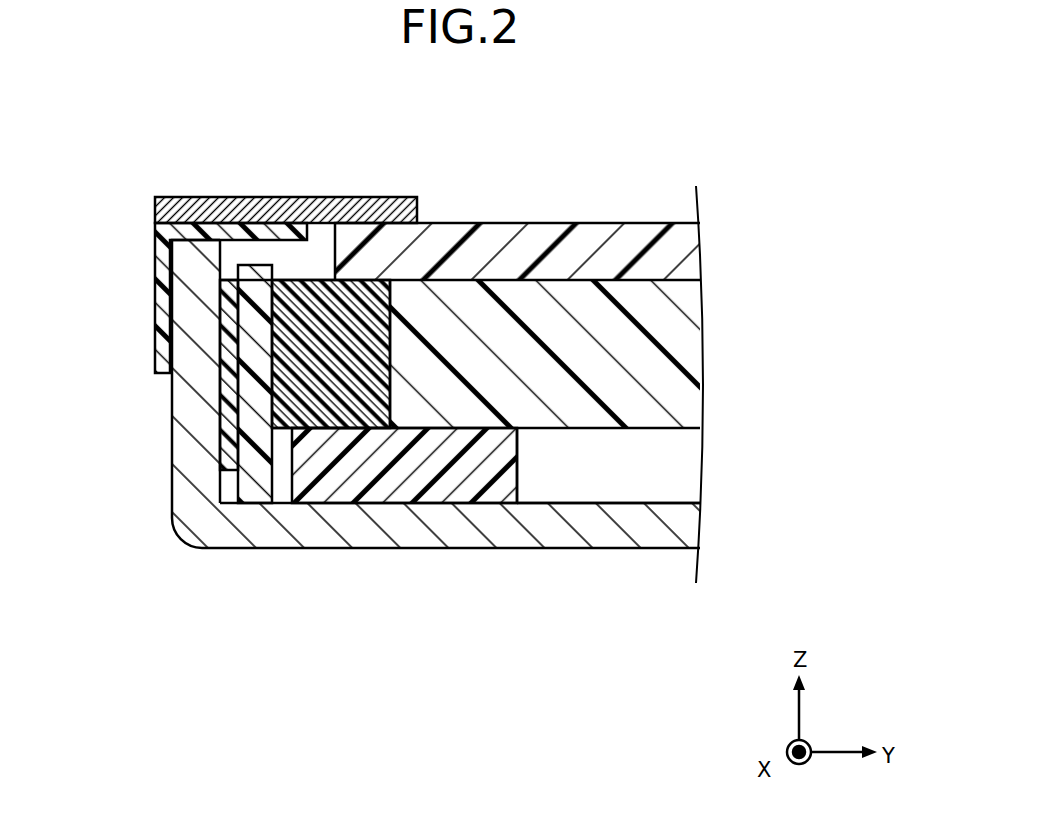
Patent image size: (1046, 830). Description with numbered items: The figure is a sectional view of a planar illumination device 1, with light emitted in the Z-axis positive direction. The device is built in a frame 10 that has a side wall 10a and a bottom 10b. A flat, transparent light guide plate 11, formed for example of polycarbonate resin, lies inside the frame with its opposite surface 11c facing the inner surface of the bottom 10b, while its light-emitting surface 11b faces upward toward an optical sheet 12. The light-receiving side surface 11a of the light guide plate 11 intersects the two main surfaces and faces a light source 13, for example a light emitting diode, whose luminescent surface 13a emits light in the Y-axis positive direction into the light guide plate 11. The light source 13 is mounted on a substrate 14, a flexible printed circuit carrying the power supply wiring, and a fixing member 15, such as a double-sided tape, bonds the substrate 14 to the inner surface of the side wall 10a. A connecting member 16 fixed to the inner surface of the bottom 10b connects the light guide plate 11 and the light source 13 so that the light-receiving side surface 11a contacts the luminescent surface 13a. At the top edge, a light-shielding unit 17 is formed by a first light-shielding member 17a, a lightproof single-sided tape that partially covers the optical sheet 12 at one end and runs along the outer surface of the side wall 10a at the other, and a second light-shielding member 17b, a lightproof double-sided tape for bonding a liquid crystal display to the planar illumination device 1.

The planar illumination device 1 is at (147, 160).
The frame 10 is at (374, 394).
The side wall 10a is at (190, 468).
The bottom 10b is at (273, 522).
The light guide plate 11 is at (460, 376).
The light-receiving side surface 11a is at (394, 303).
The light-emitting surface 11b is at (515, 280).
The opposite surface 11c is at (573, 428).
The optical sheet 12 is at (592, 247).
The light source 13 is at (246, 441).
The luminescent surface 13a is at (347, 428).
The substrate 14 is at (252, 430).
The fixing member 15 is at (232, 383).
The connecting member 16 is at (387, 480).
The light-shielding unit 17 is at (222, 282).
The first light-shielding member 17a is at (160, 249).
The second light-shielding member 17b is at (158, 204).